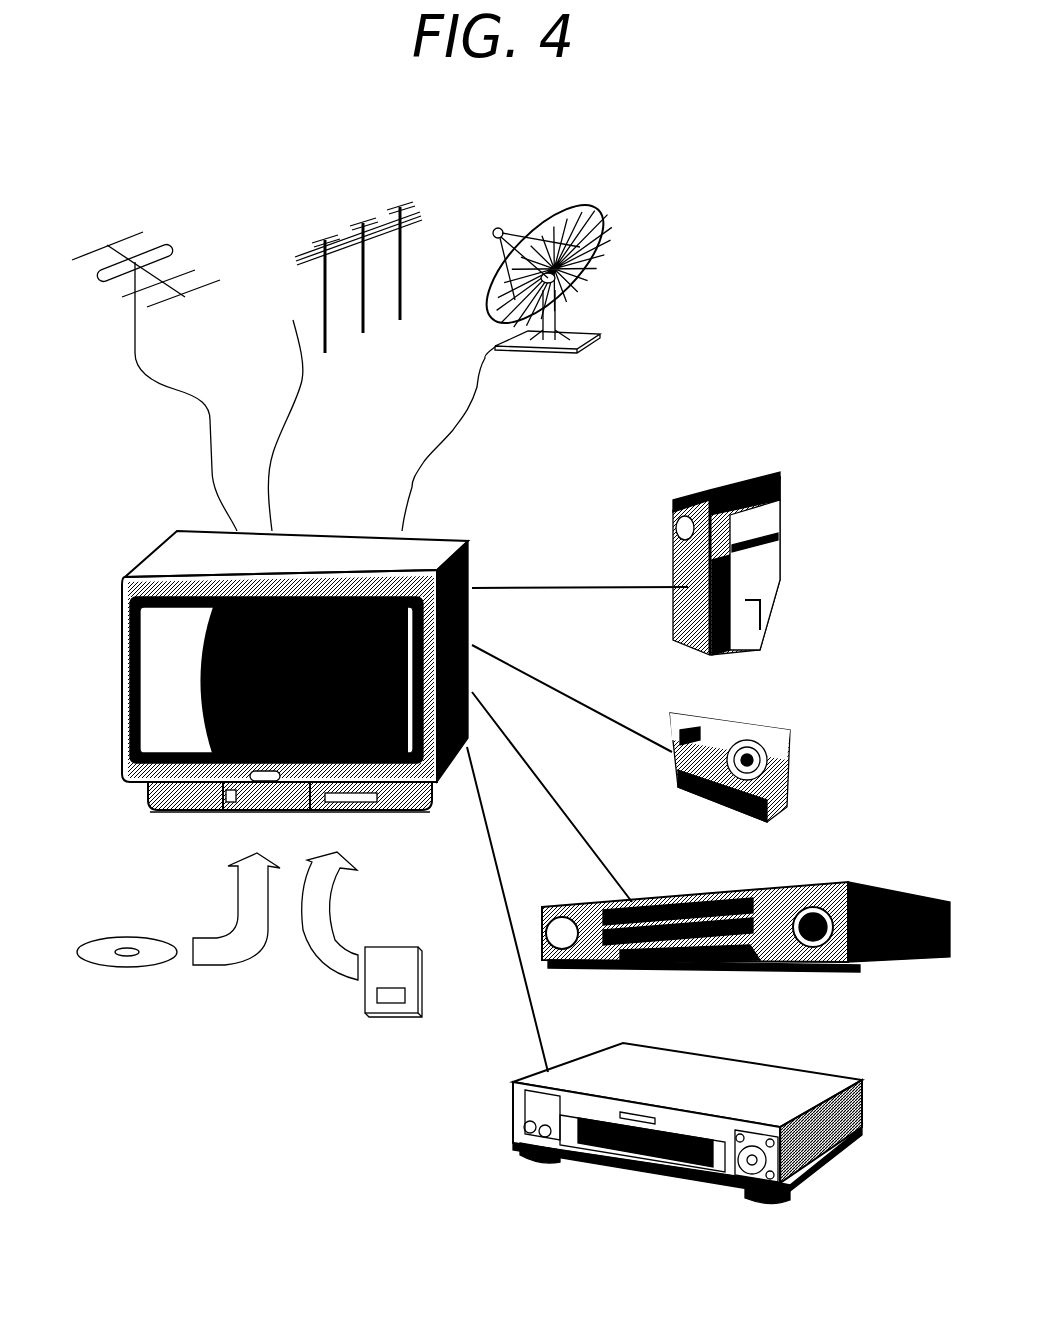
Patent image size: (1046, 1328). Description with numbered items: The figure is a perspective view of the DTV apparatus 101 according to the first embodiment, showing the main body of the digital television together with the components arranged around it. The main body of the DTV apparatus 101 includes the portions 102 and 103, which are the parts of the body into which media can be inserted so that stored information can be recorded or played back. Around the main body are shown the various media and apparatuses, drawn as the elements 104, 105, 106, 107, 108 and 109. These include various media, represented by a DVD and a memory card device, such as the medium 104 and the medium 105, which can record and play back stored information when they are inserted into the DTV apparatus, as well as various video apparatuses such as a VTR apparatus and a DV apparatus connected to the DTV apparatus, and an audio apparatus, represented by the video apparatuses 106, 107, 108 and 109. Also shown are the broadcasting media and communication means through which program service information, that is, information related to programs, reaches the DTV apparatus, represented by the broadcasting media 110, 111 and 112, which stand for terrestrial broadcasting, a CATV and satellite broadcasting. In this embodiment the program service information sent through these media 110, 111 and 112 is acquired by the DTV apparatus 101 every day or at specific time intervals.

The DTV apparatus 101 is at (158, 553).
The main body portion of the DTV apparatus 102 is at (233, 800).
The main body portion of the DTV apparatus 103 is at (358, 802).
The medium 104 is at (120, 968).
The medium 105 is at (391, 1003).
The video apparatus 106 is at (703, 498).
The video apparatus 107 is at (767, 723).
The video apparatus 108 is at (820, 882).
The video apparatus 109 is at (805, 1077).
The broadcasting medium 110 is at (168, 247).
The broadcasting medium 111 is at (398, 203).
The broadcasting medium 112 is at (560, 210).